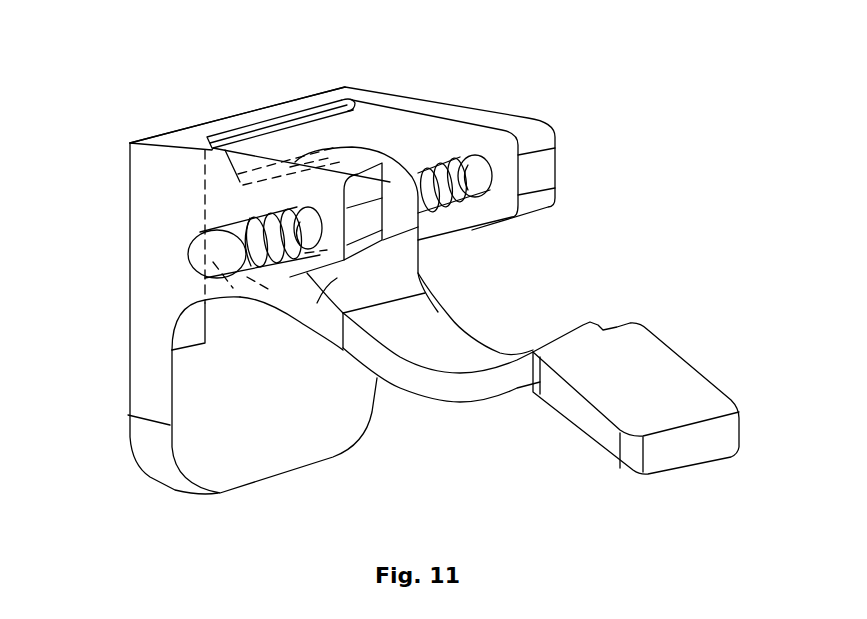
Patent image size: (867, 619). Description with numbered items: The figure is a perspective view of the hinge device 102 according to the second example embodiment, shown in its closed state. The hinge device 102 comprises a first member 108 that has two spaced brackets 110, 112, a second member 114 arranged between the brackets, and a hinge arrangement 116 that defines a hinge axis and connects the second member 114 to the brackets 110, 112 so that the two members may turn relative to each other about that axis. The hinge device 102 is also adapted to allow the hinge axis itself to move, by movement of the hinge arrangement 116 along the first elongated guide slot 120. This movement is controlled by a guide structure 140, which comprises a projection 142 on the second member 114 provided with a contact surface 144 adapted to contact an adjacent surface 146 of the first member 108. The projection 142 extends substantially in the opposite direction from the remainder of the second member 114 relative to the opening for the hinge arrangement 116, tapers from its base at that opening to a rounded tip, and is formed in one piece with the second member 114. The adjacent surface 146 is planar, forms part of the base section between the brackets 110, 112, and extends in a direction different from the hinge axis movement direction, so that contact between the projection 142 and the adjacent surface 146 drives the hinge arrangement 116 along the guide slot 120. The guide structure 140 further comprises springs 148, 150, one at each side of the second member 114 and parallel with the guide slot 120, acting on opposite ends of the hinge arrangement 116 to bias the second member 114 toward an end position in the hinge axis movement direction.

The hinge device 102 is at (647, 181).
The first member 108 is at (213, 430).
The bracket 110 is at (268, 160).
The bracket 112 is at (460, 113).
The second member 114 is at (447, 350).
The hinge arrangement 116 is at (190, 258).
The first elongated guide slot 120 is at (253, 235).
The guide structure 140 is at (247, 309).
The projection 142 is at (308, 137).
The contact surface 144 is at (298, 142).
The adjacent surface 146 is at (349, 106).
The spring 148 is at (247, 203).
The spring 150 is at (461, 197).